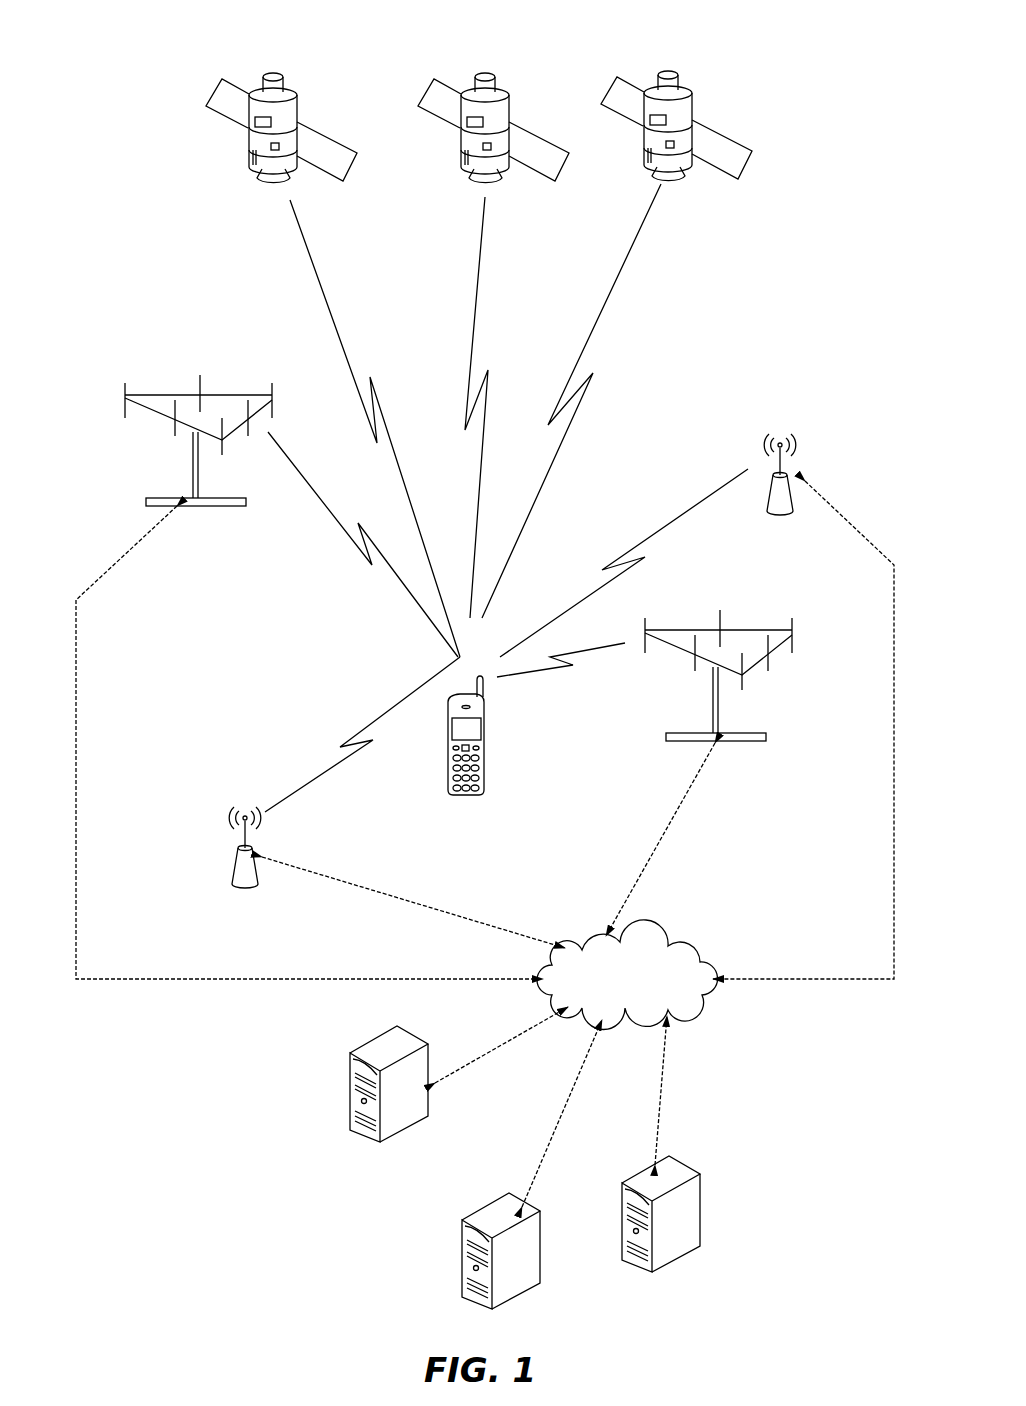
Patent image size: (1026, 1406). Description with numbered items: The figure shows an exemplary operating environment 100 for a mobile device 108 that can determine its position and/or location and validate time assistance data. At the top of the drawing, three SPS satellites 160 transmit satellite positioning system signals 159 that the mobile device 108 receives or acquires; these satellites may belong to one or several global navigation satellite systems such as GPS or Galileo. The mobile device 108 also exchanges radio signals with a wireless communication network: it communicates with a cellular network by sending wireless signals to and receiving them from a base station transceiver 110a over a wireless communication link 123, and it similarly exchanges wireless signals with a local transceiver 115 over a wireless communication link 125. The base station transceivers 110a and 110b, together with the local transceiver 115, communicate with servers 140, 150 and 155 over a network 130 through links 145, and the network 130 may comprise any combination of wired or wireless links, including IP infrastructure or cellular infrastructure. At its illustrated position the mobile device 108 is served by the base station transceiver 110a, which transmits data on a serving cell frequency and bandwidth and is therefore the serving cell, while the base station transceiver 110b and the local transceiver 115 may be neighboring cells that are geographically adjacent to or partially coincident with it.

The operating environment 100 is at (122, 67).
The mobile device 108 is at (448, 742).
The base station transceiver 110a is at (745, 742).
The base station transceiver 110b is at (207, 506).
The local transceiver 115 is at (248, 883).
The wireless communication link 123 is at (305, 468).
The wireless communication link 125 is at (712, 494).
The network 130 is at (698, 958).
The server 140 is at (416, 1040).
The links 145 is at (680, 818).
The server 150 is at (700, 1176).
The server 155 is at (540, 1213).
The satellite positioning system (SPS) signals 159 is at (318, 255).
The SPS satellites 160 is at (183, 140).